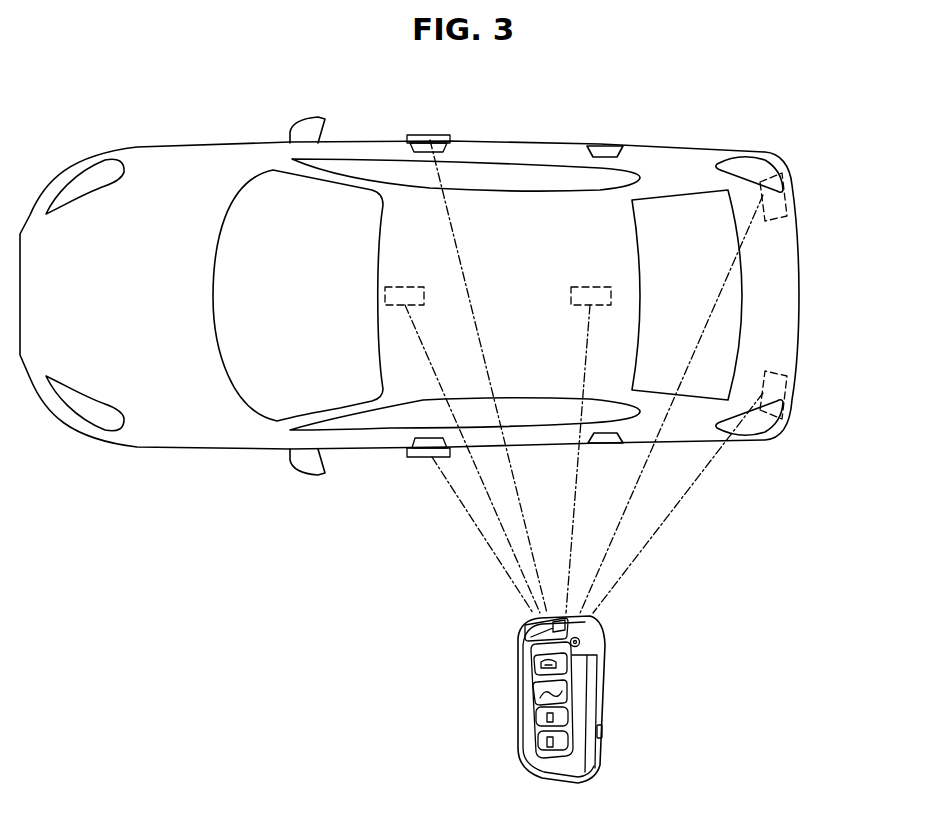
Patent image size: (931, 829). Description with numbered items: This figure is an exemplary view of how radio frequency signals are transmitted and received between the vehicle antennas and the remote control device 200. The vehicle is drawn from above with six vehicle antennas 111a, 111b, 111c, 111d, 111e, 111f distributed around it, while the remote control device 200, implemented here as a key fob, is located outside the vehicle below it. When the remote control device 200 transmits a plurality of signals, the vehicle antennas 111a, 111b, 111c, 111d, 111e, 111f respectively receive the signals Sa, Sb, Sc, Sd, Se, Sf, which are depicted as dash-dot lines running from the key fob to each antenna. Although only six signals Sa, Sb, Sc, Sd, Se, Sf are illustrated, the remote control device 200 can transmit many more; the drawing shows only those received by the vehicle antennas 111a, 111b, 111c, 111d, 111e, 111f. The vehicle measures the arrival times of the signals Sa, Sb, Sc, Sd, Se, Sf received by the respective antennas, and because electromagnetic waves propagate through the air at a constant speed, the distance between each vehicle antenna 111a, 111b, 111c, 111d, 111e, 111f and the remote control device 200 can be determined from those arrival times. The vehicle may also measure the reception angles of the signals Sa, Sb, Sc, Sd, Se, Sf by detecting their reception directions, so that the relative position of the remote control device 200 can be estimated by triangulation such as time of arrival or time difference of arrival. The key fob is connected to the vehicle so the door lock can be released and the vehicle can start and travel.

The vehicle antenna 111a is at (426, 134).
The vehicle antenna 111b is at (390, 286).
The vehicle antenna 111c is at (413, 458).
The vehicle antenna 111d is at (592, 286).
The vehicle antenna 111e is at (790, 190).
The vehicle antenna 111f is at (790, 396).
The signal Sa is at (523, 523).
The signal Sb is at (515, 563).
The signal Sc is at (522, 603).
The signal Sd is at (577, 500).
The signal Se is at (620, 520).
The signal Sf is at (640, 558).
The remote control device 200 is at (603, 687).